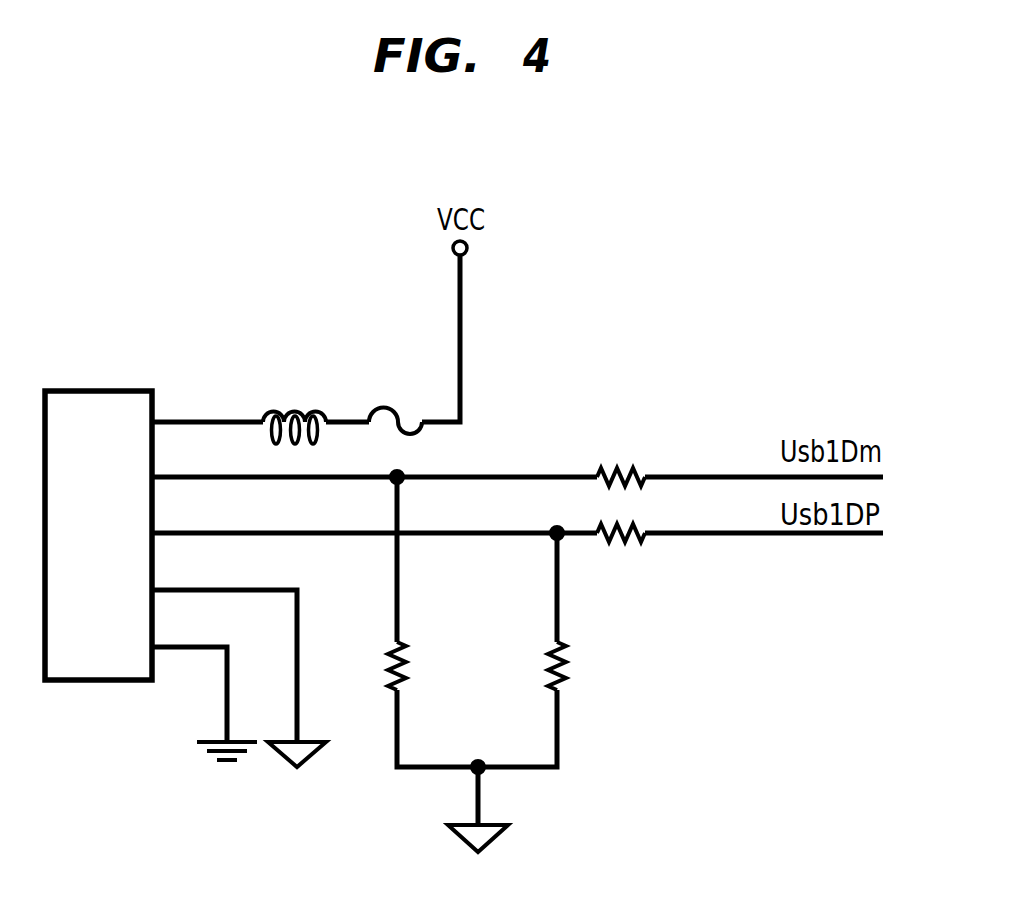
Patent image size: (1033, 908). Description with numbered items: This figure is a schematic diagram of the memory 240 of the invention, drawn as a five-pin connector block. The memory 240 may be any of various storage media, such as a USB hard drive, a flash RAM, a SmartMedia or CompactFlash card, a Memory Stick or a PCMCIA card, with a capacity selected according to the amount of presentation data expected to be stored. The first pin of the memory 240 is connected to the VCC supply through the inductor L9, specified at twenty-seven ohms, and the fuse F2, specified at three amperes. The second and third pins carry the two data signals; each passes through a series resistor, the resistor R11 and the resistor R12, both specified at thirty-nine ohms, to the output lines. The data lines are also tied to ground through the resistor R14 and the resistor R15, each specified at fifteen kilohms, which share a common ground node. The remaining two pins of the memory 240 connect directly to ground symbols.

The memory 240 is at (105, 373).
The inductor L9 is at (294, 406).
The fuse F2 is at (395, 401).
The resistor R11 is at (620, 456).
The resistor R12 is at (622, 560).
The resistor R14 is at (369, 666).
The resistor R15 is at (587, 666).